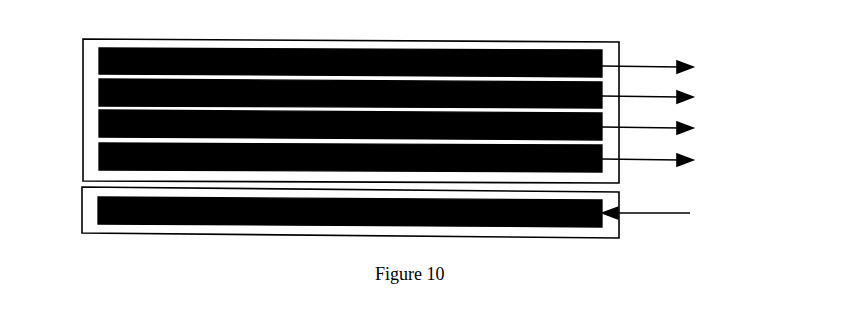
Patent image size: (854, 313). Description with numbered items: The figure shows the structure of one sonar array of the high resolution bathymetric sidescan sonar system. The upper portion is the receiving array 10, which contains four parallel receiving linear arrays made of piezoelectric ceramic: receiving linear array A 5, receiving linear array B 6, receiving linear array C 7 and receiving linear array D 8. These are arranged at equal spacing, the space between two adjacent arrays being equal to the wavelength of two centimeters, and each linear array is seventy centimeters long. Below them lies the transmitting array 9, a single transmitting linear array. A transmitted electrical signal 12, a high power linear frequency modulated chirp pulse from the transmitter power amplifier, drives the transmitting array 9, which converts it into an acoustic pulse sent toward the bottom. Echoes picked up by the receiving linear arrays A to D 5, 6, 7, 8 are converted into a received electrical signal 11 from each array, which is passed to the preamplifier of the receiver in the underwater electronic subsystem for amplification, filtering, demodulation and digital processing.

The receiving linear array A 5 is at (88, 62).
The receiving linear array B 6 is at (88, 95).
The receiving linear array C 7 is at (88, 127).
The receiving linear array D 8 is at (90, 161).
The transmitting array 9 is at (345, 232).
The receiving array 10 is at (354, 42).
The received electrical signal 11 is at (660, 57).
The transmitted electrical signal 12 is at (660, 222).